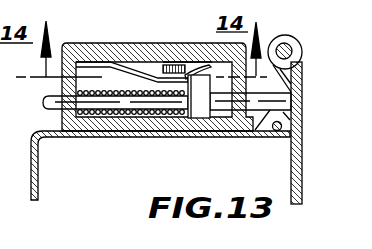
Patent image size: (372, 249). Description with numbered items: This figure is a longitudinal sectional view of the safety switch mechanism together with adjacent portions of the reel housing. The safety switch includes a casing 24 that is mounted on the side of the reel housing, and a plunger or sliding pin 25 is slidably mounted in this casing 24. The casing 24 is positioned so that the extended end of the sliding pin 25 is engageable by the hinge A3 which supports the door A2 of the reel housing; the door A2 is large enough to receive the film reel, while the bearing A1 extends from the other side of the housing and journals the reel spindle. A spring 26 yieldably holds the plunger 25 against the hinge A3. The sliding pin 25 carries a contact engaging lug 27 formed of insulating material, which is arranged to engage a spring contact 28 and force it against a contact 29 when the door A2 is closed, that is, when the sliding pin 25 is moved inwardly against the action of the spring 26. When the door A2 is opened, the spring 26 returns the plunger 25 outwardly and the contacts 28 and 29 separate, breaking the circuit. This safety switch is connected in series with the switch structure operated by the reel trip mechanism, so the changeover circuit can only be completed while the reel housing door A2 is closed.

The casing 24 is at (88, 50).
The plunger or sliding pin 25 is at (222, 106).
The spring 26 is at (129, 115).
The contact engaging lug 27 is at (199, 112).
The spring contact 28 is at (148, 76).
The contact 29 is at (174, 63).
The bearing A1 is at (38, 170).
The door A2 is at (301, 167).
The hinge A3 is at (301, 88).